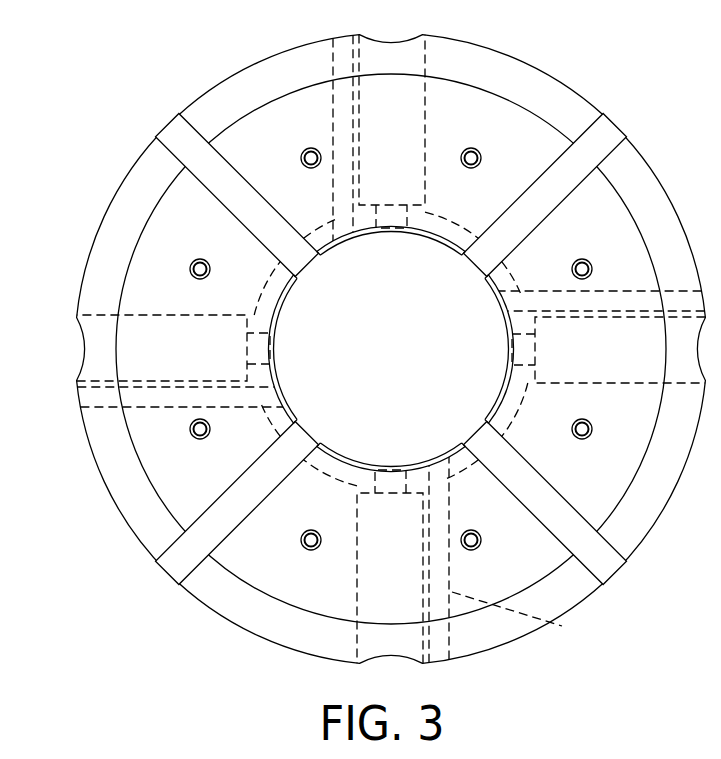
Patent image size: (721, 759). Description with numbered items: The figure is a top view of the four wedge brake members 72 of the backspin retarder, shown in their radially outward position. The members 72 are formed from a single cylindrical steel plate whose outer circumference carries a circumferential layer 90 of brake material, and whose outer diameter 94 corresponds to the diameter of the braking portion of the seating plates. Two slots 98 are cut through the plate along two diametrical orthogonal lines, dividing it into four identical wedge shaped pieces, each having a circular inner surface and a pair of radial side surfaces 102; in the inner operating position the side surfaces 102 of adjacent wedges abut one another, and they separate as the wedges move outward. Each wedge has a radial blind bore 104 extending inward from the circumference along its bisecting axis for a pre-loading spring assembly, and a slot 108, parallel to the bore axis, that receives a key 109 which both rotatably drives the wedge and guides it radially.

The chuck body 72 is at (363, 353).
The circumferential layer of brake material 90 is at (480, 65).
The outer diameter 94 is at (137, 157).
The slots 98 is at (267, 477).
The side surfaces 102 is at (558, 208).
The radial blind bore 104 is at (214, 318).
The slot 108 is at (331, 130).
The key 109 is at (562, 626).